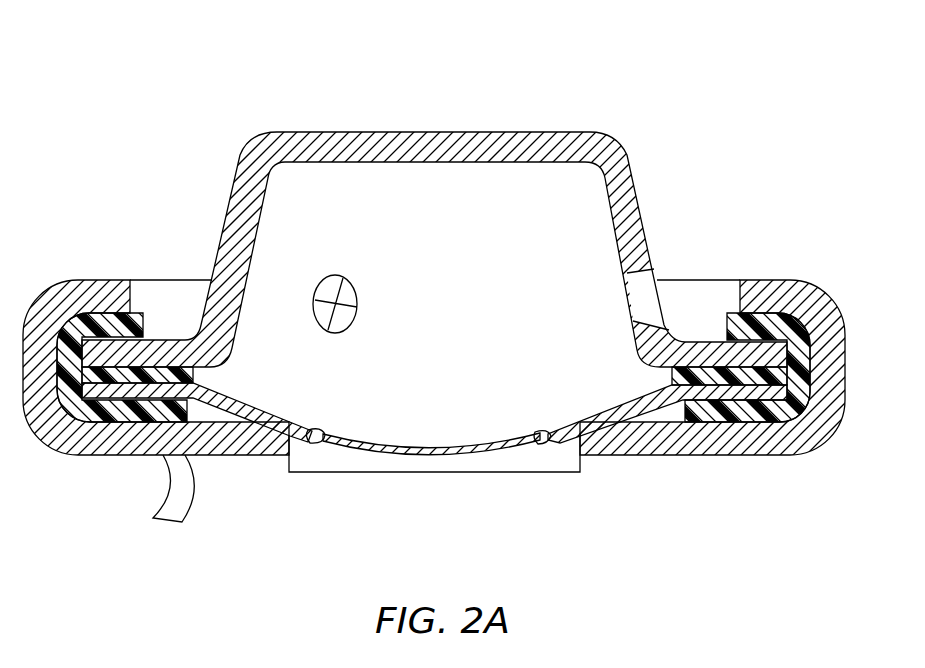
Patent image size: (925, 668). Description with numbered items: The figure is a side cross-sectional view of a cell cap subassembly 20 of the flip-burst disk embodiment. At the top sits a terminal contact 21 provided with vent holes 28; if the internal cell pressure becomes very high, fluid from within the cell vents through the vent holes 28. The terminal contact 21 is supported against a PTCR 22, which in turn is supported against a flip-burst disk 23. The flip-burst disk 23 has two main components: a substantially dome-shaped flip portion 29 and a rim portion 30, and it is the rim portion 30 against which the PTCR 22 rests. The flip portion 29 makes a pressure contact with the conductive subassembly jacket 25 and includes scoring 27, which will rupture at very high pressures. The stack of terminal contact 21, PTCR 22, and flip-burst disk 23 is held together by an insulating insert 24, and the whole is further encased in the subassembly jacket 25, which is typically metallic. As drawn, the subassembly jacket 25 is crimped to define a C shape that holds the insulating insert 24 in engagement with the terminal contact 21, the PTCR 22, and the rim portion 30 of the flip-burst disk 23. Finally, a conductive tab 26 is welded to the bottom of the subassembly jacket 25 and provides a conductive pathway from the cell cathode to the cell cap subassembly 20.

The cell cap subassembly 20 is at (212, 85).
The terminal contact 21 is at (423, 133).
The PTCR 22 is at (165, 373).
The flip-burst disk 23 is at (593, 423).
The insulating insert 24 is at (90, 413).
The subassembly jacket 25 is at (73, 297).
The conductive tab 26 is at (187, 513).
The scoring 27 is at (315, 442).
The vent holes 28 is at (357, 292).
The flip portion 29 is at (423, 455).
The rim portion 30 is at (793, 420).